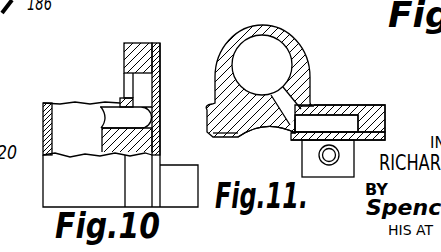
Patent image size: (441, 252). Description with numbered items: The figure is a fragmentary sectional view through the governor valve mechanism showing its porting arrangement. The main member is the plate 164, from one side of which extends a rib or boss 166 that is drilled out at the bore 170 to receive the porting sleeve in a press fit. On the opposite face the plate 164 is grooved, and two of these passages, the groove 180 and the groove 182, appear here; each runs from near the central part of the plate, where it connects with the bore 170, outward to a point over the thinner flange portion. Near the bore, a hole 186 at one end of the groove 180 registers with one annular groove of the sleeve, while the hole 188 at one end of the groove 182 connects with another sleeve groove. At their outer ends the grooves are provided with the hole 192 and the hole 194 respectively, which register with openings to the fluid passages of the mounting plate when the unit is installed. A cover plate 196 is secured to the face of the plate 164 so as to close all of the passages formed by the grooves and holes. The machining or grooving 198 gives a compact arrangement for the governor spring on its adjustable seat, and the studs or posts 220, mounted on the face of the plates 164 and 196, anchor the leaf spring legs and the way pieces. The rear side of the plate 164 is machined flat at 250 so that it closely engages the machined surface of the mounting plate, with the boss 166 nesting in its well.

In FIG. 10, the plate 164 is at (152, 34).
In FIG. 11, the plate 164 is at (387, 108).
In FIG. 10, the rib or boss 166 is at (53, 190).
In FIG. 11, the rib or boss 166 is at (306, 56).
In FIG. 10, the bore 170 is at (67, 113).
In FIG. 11, the bore 170 is at (257, 36).
In FIG. 11, the groove 180 is at (333, 123).
In FIG. 10, the groove 182 is at (143, 92).
In FIG. 11, the passage 186 is at (287, 103).
In FIG. 10, the hole 188 is at (117, 124).
In FIG. 11, the hole 192 is at (352, 110).
In FIG. 10, the hole 194 is at (127, 91).
In FIG. 10, the cover plate 196 is at (160, 56).
In FIG. 11, the cover plate 196 is at (387, 130).
In FIG. 11, the machining or grooving 198 is at (266, 130).
In FIG. 10, the studs or posts 220 is at (183, 198).
In FIG. 11, the studs or posts 220 is at (310, 165).
In FIG. 10, the machined flat 250 is at (125, 45).
In FIG. 11, the machined flat 250 is at (376, 110).